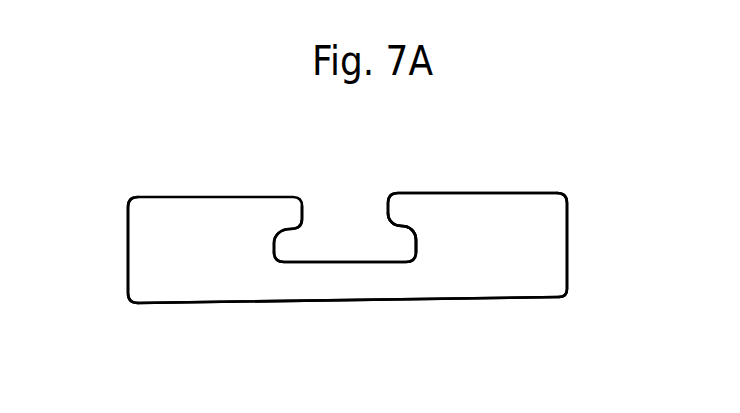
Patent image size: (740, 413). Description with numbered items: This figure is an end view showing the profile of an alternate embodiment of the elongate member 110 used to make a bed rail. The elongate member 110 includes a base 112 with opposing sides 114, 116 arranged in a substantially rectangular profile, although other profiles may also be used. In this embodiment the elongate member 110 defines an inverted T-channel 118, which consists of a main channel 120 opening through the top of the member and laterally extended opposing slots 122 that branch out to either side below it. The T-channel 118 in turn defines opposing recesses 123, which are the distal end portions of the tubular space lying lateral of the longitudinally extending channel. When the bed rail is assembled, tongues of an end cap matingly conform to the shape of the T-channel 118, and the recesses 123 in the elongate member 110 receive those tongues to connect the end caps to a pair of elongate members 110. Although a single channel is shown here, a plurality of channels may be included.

The elongate member 110 is at (192, 197).
The base 112 is at (432, 300).
The opposing side 114 is at (126, 248).
The opposing side 116 is at (568, 249).
The inverted T-channel 118 is at (346, 217).
The main channel 120 is at (352, 238).
The laterally extended opposing slots 122 is at (403, 244).
The opposing recesses 123 is at (185, 268).